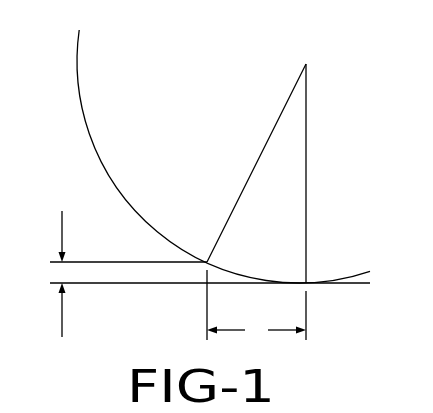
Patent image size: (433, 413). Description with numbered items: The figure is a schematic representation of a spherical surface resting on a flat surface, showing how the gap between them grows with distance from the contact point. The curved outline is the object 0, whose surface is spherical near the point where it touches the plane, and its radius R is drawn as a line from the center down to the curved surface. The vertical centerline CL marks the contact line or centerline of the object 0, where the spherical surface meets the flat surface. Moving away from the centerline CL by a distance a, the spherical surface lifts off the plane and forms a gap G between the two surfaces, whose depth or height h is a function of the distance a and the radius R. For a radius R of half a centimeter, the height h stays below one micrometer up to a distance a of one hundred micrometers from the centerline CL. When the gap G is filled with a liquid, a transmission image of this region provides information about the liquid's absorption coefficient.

The object 0 is at (88, 106).
The radius R is at (256, 163).
The centerline CL is at (306, 172).
The gap G is at (162, 274).
The depth or height h is at (62, 211).
The distance a is at (256, 305).